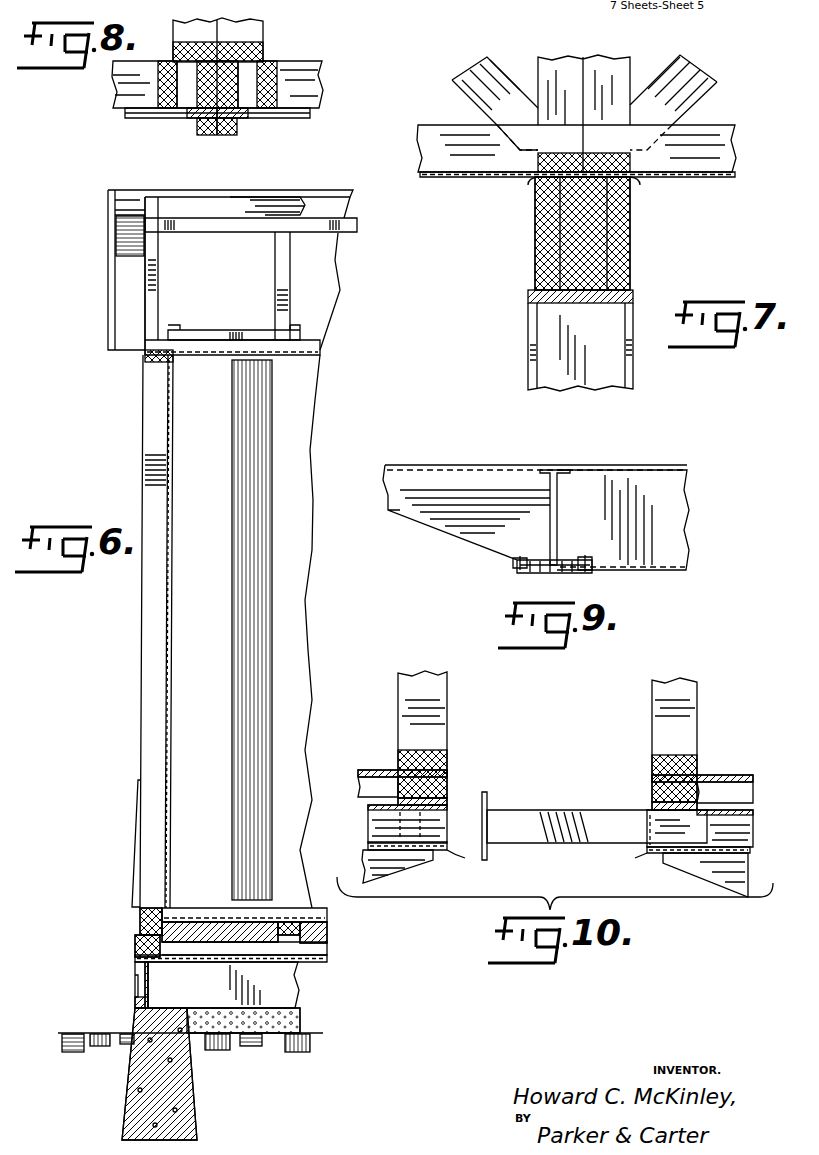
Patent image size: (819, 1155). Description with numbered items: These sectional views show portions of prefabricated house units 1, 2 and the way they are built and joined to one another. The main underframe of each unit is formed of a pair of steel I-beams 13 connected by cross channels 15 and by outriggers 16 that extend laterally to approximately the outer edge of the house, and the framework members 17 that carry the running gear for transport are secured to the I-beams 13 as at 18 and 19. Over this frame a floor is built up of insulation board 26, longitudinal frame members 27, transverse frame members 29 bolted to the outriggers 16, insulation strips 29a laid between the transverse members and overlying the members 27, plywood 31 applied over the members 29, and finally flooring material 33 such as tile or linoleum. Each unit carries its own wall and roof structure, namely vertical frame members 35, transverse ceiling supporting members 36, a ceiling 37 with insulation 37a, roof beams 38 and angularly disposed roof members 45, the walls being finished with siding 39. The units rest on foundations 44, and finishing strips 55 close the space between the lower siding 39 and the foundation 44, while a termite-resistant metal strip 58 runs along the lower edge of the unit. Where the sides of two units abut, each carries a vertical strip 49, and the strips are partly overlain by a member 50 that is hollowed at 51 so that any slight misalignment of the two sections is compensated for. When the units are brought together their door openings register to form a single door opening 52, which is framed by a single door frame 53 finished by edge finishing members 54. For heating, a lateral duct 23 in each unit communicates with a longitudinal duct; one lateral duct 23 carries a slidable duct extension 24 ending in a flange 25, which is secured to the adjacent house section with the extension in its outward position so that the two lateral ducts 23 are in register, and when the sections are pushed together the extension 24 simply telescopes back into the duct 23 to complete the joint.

In FIG. 10, the building structure 1 is at (715, 686).
In FIG. 10, the building structure 2 is at (421, 662).
In FIG. 6, the I-beam 13 is at (290, 990).
In FIG. 9, the I-beam 13 is at (558, 512).
In FIG. 9, the cross channel 15 is at (683, 518).
In FIG. 6, the outrigger 16 is at (142, 975).
In FIG. 9, the outrigger 16 is at (440, 527).
In FIG. 10, the outrigger 16 is at (685, 877).
In FIG. 9, the running gear frame member 17 is at (545, 575).
In FIG. 9, the securing point 18 is at (590, 572).
In FIG. 9, the securing point 19 is at (513, 565).
In FIG. 10, the lateral duct 23 is at (740, 836).
In FIG. 10, the slidable duct extension 24 is at (562, 810).
In FIG. 10, the flange 25 is at (487, 795).
In FIG. 6, the insulation board 26 is at (325, 958).
In FIG. 10, the insulation board 26 is at (745, 850).
In FIG. 6, the longitudinal frame member 27 is at (325, 935).
In FIG. 6, the transverse frame member 29 is at (322, 913).
In FIG. 6, the insulation strip 29a is at (290, 912).
In FIG. 6, the plywood 31 is at (235, 925).
In FIG. 10, the plywood 31 is at (718, 775).
In FIG. 6, the flooring material 33 is at (215, 915).
In FIG. 8, the vertical frame member 35 is at (255, 48).
In FIG. 6, the vertical frame member 35 is at (148, 608).
In FIG. 10, the vertical frame member 35 is at (690, 715).
In FIG. 7, the transverse ceiling supporting member 36 is at (715, 135).
In FIG. 6, the transverse ceiling supporting member 36 is at (312, 340).
In FIG. 7, the ceiling 37 is at (697, 178).
In FIG. 6, the insulation 37a is at (240, 333).
In FIG. 6, the roof beam 38 is at (152, 197).
In FIG. 8, the siding 39 is at (305, 117).
In FIG. 6, the siding 39 is at (135, 840).
In FIG. 6, the foundation 44 is at (185, 1100).
In FIG. 7, the angularly disposed roof member 45 is at (695, 73).
In FIG. 6, the angularly disposed roof member 45 is at (275, 268).
In FIG. 8, the vertical strip 49 is at (243, 120).
In FIG. 8, the covering member 50 is at (213, 137).
In FIG. 8, the hollow 51 is at (223, 126).
In FIG. 7, the door opening 52 is at (583, 386).
In FIG. 7, the door frame 53 is at (628, 294).
In FIG. 7, the edge finishing member 54 is at (632, 366).
In FIG. 6, the finishing strip 55 is at (135, 990).
In FIG. 6, the termite-resistant metal strip 58 is at (137, 949).
In FIG. 10, the termite-resistant metal strip 58 is at (648, 858).